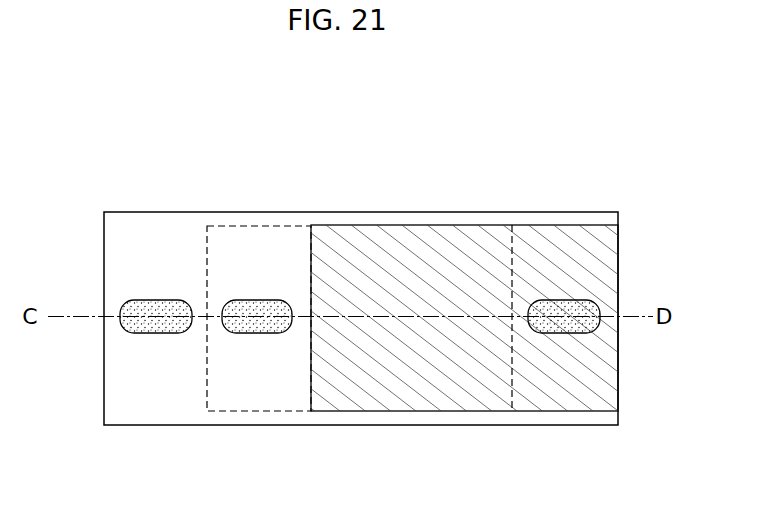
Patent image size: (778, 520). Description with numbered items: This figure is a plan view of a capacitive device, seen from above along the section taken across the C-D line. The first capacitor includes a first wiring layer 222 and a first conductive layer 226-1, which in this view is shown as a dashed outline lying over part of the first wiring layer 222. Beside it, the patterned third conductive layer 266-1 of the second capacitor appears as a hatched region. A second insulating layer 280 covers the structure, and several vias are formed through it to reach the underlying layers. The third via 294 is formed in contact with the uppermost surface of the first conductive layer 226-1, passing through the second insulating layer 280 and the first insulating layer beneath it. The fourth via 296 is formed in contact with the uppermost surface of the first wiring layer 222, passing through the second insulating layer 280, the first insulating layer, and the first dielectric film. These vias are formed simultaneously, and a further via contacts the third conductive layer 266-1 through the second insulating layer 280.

The first wiring layer 222 is at (172, 395).
The first conductive layer 226-1 is at (273, 387).
The third conductive layer 266-1 is at (413, 377).
The fourth via 296 is at (157, 308).
The third via 294 is at (263, 312).
The second insulating layer 280 is at (565, 303).